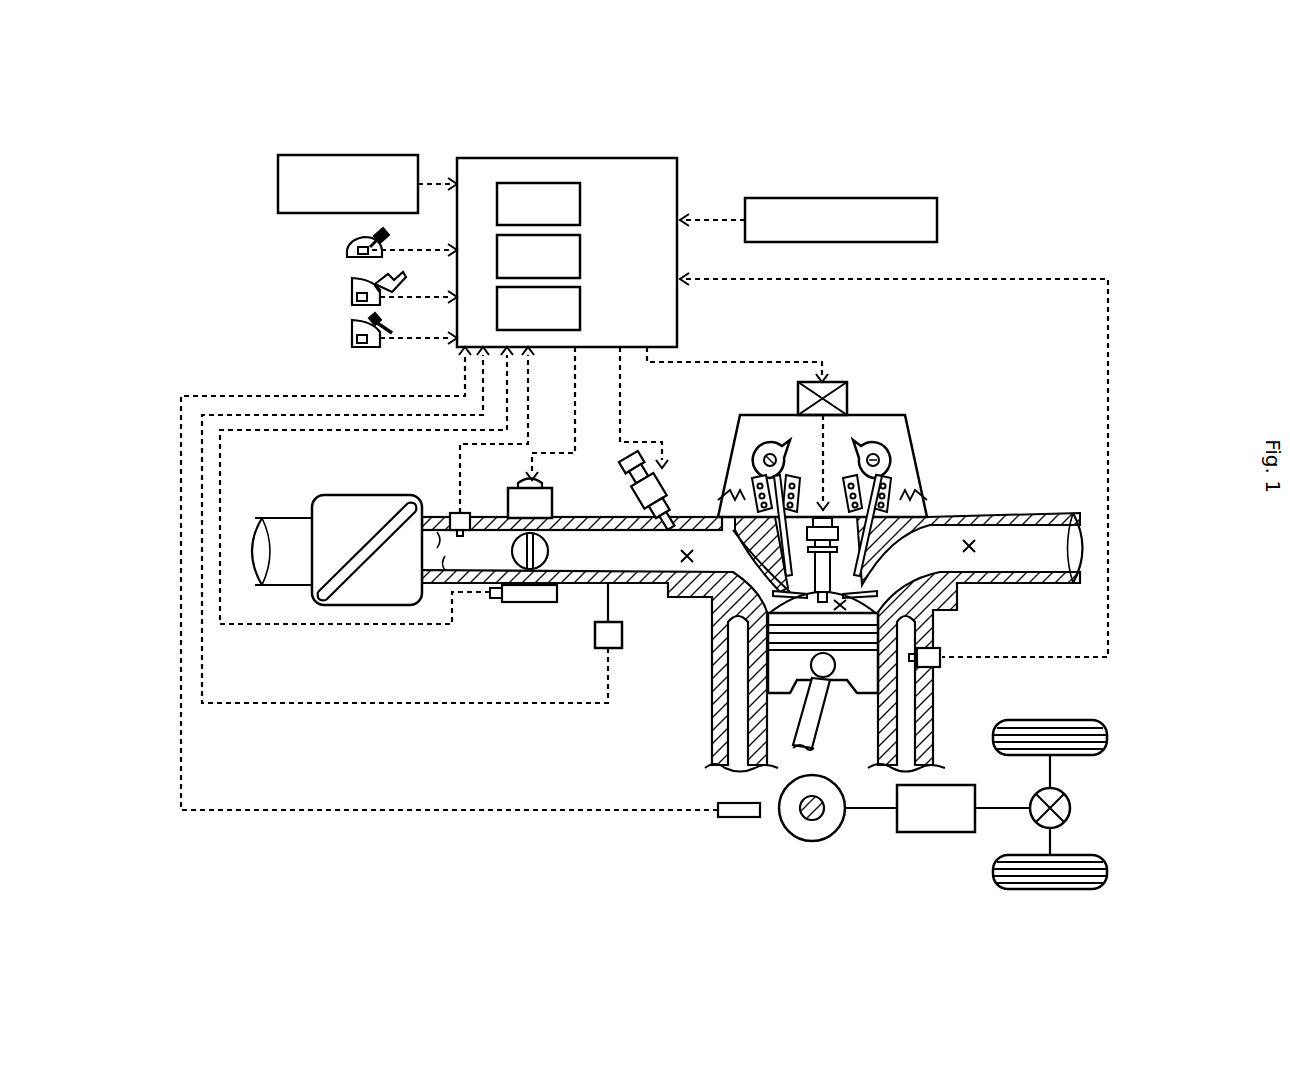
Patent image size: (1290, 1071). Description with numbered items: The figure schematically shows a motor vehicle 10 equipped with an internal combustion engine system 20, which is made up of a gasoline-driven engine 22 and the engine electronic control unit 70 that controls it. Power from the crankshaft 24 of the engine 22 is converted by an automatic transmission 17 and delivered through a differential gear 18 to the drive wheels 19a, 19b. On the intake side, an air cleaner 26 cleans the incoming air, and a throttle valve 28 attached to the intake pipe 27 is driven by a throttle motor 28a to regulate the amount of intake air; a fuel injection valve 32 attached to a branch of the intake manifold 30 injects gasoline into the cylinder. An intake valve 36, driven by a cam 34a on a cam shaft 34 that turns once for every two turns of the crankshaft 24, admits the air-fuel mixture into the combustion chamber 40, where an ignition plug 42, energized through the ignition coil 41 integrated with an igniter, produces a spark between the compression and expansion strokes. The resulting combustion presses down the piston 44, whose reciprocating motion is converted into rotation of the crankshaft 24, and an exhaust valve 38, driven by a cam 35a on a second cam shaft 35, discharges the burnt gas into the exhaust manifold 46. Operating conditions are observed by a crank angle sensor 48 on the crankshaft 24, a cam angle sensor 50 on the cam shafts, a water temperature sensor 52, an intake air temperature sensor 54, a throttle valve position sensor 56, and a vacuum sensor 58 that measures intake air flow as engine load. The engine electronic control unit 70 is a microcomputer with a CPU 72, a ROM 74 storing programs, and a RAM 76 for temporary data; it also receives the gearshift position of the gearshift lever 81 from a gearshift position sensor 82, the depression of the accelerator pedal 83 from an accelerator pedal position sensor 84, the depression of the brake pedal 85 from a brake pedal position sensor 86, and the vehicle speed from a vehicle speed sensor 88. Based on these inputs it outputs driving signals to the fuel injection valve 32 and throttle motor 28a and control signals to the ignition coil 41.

The motor vehicle 10 is at (1003, 152).
The automatic transmission 17 is at (933, 833).
The differential gear 18 is at (1063, 792).
The drive wheel 19a is at (1022, 720).
The drive wheel 19b is at (1072, 855).
The internal combustion engine system 20 is at (343, 97).
The engine 22 is at (667, 571).
The crankshaft 24 is at (813, 842).
The air cleaner 26 is at (369, 606).
The intake pipe 27 is at (437, 574).
The throttle valve 28 is at (545, 563).
The throttle motor 28a is at (518, 489).
The intake manifold 30 is at (687, 565).
The fuel injection valve 32 is at (640, 512).
The cam shaft 34 is at (764, 462).
The cam 34a is at (768, 456).
The cam shaft 35 is at (877, 458).
The cam 35a is at (873, 455).
The intake valve 36 is at (768, 578).
The exhaust valve 38 is at (860, 600).
The combustion chamber 40 is at (848, 606).
The ignition coil 41 is at (848, 394).
The ignition plug 42 is at (840, 588).
The piston 44 is at (790, 672).
The exhaust manifold 46 is at (968, 546).
The crank angle sensor 48 is at (730, 818).
The cam angle sensor 50 is at (937, 215).
The water temperature sensor 52 is at (942, 667).
The intake air temperature sensor 54 is at (452, 512).
The throttle valve position sensor 56 is at (510, 604).
The vacuum sensor 58 is at (595, 630).
The engine electronic control unit 70 is at (677, 158).
The CPU 72 is at (580, 204).
The ROM 74 is at (580, 256).
The RAM 76 is at (580, 308).
The gearshift lever 81 is at (378, 233).
The gearshift position sensor 82 is at (350, 250).
The accelerator pedal 83 is at (392, 280).
The accelerator pedal position sensor 84 is at (358, 297).
The brake pedal 85 is at (376, 320).
The brake pedal position sensor 86 is at (358, 339).
The vehicle speed sensor 88 is at (278, 182).